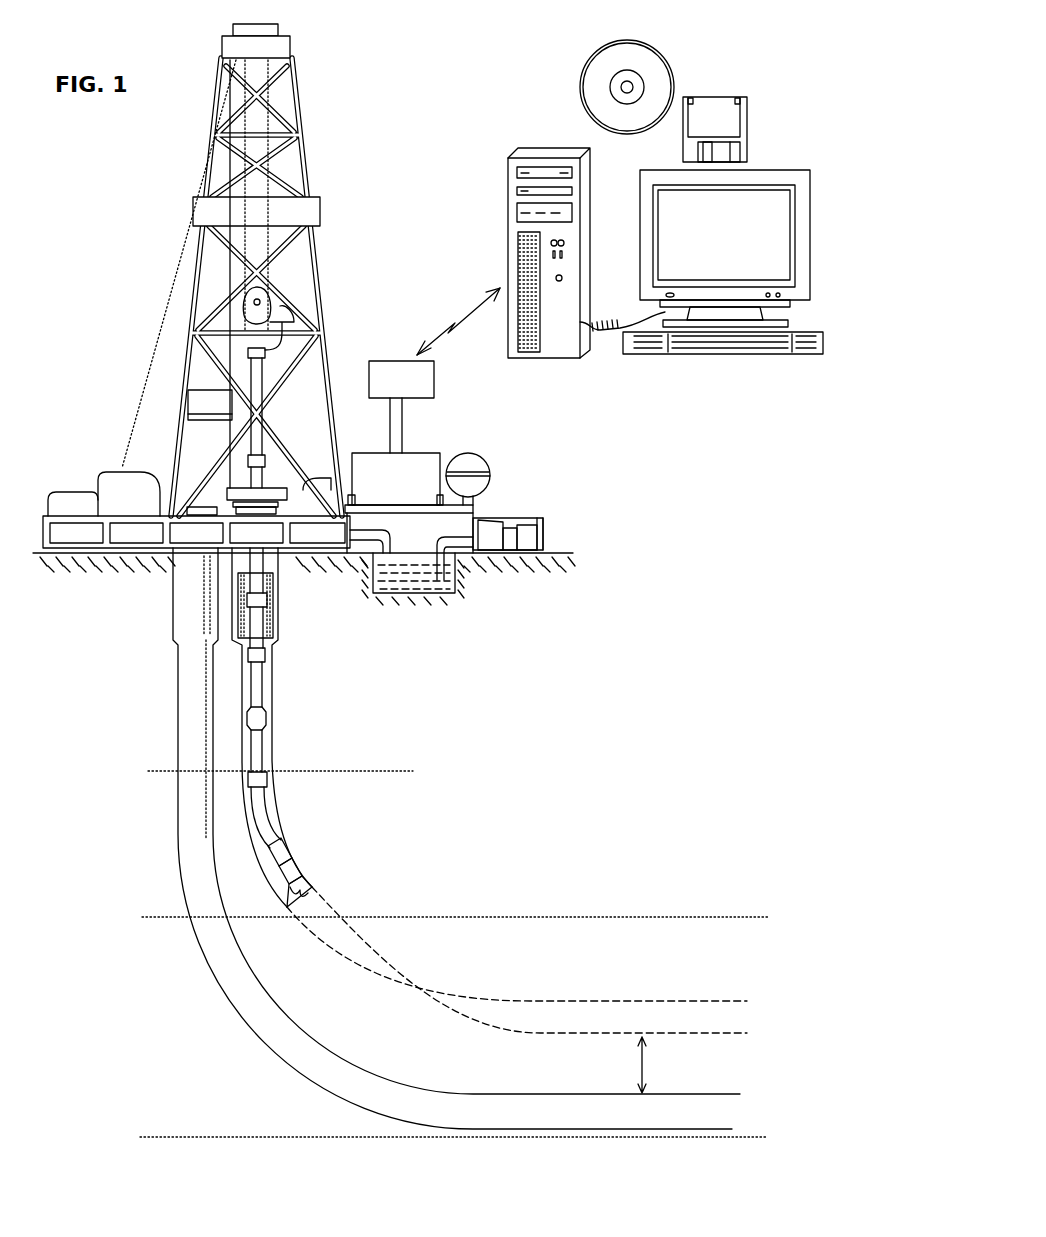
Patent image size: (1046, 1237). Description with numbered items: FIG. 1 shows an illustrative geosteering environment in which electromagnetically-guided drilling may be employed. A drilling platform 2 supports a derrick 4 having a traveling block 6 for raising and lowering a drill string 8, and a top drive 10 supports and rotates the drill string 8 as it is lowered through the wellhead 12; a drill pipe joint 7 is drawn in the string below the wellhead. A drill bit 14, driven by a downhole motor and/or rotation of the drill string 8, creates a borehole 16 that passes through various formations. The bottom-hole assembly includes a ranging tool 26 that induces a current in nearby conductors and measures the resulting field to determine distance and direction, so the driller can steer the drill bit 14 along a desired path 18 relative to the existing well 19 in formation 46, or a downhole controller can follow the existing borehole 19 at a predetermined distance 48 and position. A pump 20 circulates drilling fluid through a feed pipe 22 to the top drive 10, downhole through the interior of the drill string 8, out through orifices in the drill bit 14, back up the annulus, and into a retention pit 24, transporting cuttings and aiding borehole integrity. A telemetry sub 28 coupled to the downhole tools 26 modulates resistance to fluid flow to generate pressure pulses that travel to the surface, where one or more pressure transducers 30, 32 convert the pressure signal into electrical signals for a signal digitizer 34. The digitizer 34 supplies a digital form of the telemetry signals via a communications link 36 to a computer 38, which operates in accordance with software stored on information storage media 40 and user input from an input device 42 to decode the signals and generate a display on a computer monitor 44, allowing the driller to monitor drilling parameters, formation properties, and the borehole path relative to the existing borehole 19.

The drilling platform 2 is at (43, 527).
The derrick 4 is at (302, 164).
The traveling block 6 is at (273, 300).
The drill pipe joint 7 is at (266, 655).
The drill string 8 is at (263, 692).
The top drive 10 is at (258, 375).
The wellhead 12 is at (240, 490).
The drill bit 14 is at (304, 890).
The borehole 16 is at (273, 748).
The desired path 18 is at (413, 977).
The existing well 19 is at (327, 1090).
The pump 20 is at (490, 527).
The feed pipe 22 is at (452, 512).
The retention pit 24 is at (393, 580).
The ranging tool 26 is at (293, 870).
The telemetry sub 28 is at (282, 845).
The pressure transducer 30 is at (362, 492).
The pressure transducer 32 is at (439, 497).
The signal digitizer 34 is at (405, 390).
The communications link 36 is at (458, 320).
The computer 38 is at (590, 275).
The information storage media 40 is at (699, 97).
The input device 42 is at (812, 355).
The computer monitor 44 is at (797, 300).
The formation 46 is at (178, 1059).
The predetermined distance 48 is at (630, 1065).